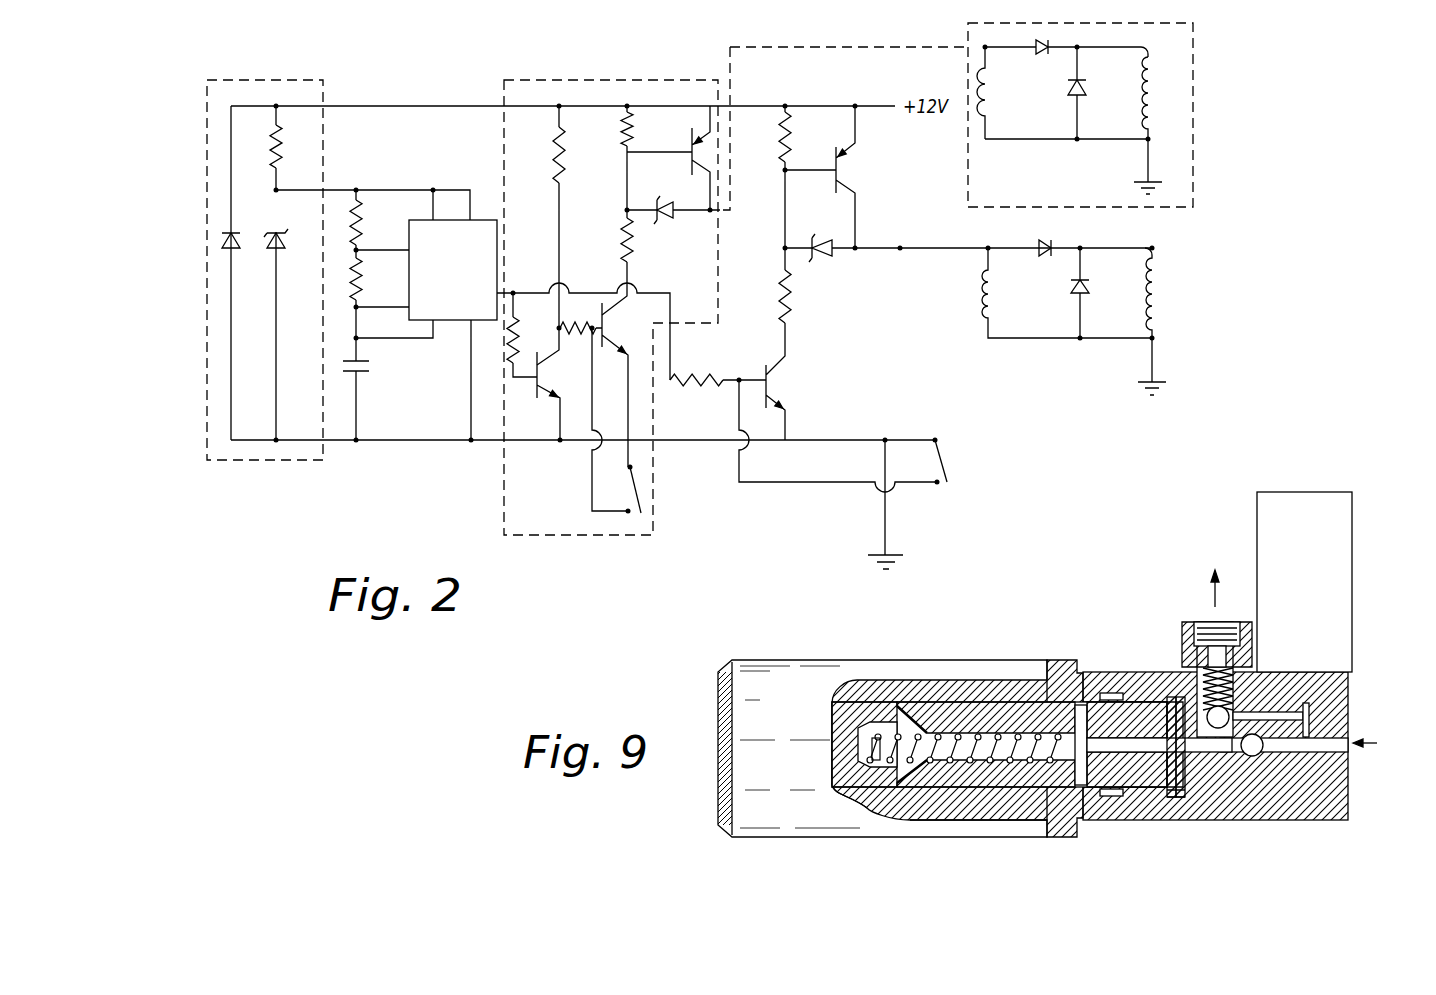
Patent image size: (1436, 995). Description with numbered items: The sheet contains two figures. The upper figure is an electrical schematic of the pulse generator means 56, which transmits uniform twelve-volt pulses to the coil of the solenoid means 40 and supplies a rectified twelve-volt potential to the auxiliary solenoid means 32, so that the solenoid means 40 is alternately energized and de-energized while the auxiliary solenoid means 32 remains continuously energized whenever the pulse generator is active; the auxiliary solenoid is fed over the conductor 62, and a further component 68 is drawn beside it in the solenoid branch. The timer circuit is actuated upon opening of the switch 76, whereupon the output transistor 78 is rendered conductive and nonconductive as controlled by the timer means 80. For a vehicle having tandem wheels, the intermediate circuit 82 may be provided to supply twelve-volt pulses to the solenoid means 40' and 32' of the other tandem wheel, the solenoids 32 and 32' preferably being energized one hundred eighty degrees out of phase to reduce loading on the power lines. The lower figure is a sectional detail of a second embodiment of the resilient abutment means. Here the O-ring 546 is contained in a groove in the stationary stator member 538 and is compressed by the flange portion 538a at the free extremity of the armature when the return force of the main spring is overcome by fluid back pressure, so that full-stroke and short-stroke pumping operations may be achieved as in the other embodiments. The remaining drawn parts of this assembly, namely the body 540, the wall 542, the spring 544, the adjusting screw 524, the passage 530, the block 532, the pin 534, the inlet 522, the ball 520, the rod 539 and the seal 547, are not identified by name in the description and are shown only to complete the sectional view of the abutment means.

In FIG. 2, the pulse generator means 56 is at (566, 37).
In FIG. 2, the output transistor 78 is at (748, 355).
In FIG. 2, the timer means 80 is at (497, 250).
In FIG. 2, the intermediate circuit 82 is at (611, 534).
In FIG. 2, the switch 76 is at (943, 461).
In FIG. 2, the solenoid means 40 is at (1039, 293).
In FIG. 2, the conductor 62 is at (1045, 257).
In FIG. 2, the diode 68 is at (1088, 293).
In FIG. 2, the auxiliary solenoid means 32 is at (1177, 321).
In FIG. 2, the solenoid means 40' is at (1008, 93).
In FIG. 2, the solenoid means 32' is at (1194, 98).
In FIG. 9, the valve body 540 is at (850, 652).
In FIG. 9, the stationary stator member 538 is at (955, 702).
In FIG. 9, the cartridge wall 542 is at (913, 818).
In FIG. 9, the spring 544 is at (967, 762).
In FIG. 9, the O-ring 546 is at (1098, 690).
In FIG. 9, the flange portion 538a is at (1155, 690).
In FIG. 9, the adjusting screw 524 is at (1197, 622).
In FIG. 9, the passage 530 is at (1273, 713).
In FIG. 9, the block 532 is at (1343, 544).
In FIG. 9, the pin 534 is at (1309, 704).
In FIG. 9, the inlet passage 522 is at (1356, 747).
In FIG. 9, the ball 520 is at (1238, 757).
In FIG. 9, the rod 539 is at (1103, 748).
In FIG. 9, the seal 547 is at (1168, 800).